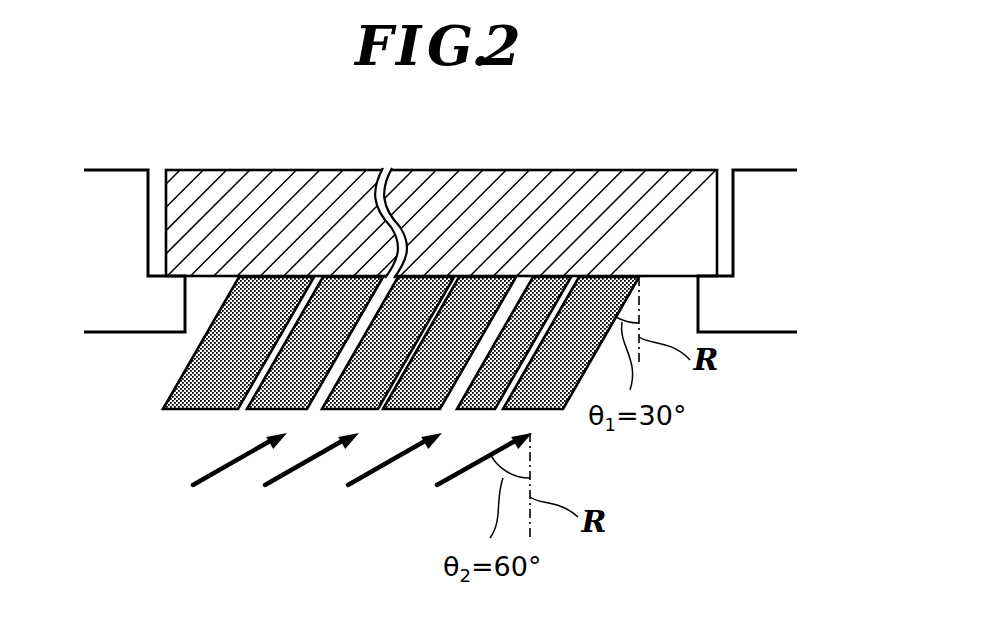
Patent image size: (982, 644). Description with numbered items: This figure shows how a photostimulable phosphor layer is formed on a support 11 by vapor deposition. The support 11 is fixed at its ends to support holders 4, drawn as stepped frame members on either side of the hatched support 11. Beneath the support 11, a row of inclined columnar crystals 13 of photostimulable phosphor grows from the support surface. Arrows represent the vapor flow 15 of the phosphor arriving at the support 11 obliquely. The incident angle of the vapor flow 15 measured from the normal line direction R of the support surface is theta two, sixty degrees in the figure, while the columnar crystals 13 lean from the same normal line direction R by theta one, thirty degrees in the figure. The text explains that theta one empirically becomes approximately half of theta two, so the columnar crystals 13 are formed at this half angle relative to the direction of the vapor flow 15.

The support holders 4 is at (110, 180).
The support 11 is at (259, 180).
The columnar crystal 13 is at (163, 411).
The vapor flow 15 is at (440, 482).